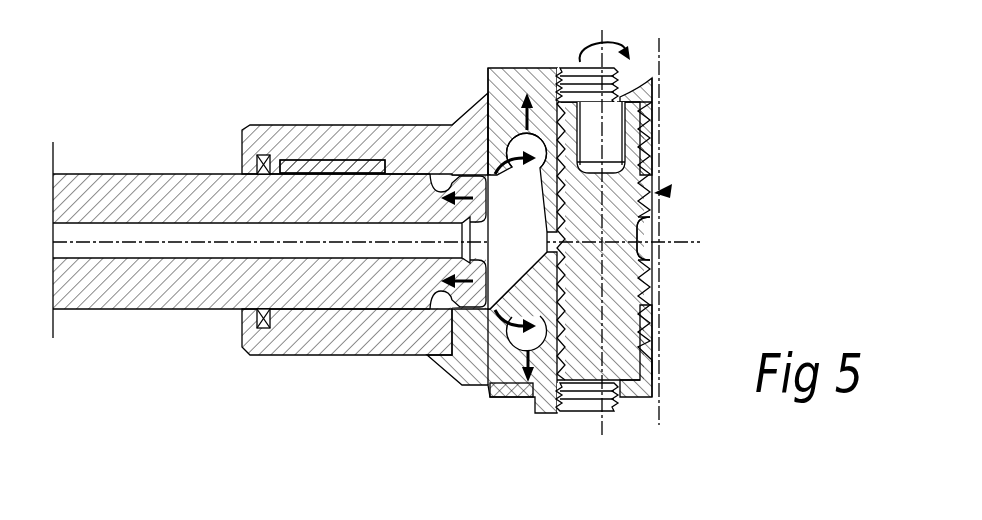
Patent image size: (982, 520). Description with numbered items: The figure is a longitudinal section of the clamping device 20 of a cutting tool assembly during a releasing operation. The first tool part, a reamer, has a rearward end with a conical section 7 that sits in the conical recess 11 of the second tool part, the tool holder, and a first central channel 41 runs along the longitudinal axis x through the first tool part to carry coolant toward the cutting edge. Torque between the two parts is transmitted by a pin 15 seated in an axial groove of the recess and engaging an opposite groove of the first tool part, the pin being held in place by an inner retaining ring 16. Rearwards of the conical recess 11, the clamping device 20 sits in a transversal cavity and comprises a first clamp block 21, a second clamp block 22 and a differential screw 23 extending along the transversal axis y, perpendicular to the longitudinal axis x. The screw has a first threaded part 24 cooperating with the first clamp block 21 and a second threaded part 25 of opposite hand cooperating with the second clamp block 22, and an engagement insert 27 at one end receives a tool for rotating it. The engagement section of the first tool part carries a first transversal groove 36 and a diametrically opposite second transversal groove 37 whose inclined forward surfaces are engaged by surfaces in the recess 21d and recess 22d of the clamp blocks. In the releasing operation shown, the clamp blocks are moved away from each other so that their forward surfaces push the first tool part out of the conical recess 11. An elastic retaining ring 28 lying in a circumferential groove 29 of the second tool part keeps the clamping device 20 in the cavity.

The conical section 7 is at (316, 193).
The conical recess 11 is at (357, 293).
The pin 15 is at (348, 167).
The inner retaining ring 16 is at (262, 160).
The clamping device 20 is at (668, 191).
The first clamp block 21 is at (503, 93).
The recess 21d is at (489, 165).
The second clamp block 22 is at (548, 395).
The recess 22d is at (490, 311).
The differential screw 23 is at (632, 274).
The first threaded part 24 is at (636, 138).
The second threaded part 25 is at (624, 343).
The engagement insert 27 is at (618, 123).
The elastic retaining ring 28 is at (520, 390).
The circumferential groove 29 is at (496, 400).
The first transversal groove 36 is at (440, 192).
The second transversal groove 37 is at (427, 303).
The first central channel 41 is at (186, 250).
The longitudinal axis x is at (130, 242).
The transversal axis y is at (603, 422).